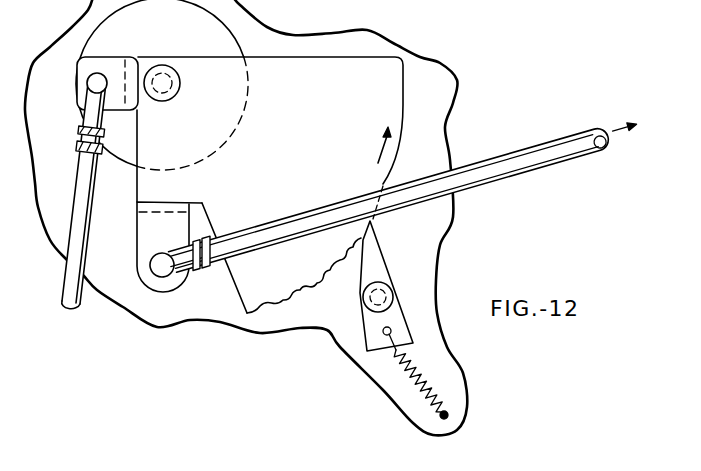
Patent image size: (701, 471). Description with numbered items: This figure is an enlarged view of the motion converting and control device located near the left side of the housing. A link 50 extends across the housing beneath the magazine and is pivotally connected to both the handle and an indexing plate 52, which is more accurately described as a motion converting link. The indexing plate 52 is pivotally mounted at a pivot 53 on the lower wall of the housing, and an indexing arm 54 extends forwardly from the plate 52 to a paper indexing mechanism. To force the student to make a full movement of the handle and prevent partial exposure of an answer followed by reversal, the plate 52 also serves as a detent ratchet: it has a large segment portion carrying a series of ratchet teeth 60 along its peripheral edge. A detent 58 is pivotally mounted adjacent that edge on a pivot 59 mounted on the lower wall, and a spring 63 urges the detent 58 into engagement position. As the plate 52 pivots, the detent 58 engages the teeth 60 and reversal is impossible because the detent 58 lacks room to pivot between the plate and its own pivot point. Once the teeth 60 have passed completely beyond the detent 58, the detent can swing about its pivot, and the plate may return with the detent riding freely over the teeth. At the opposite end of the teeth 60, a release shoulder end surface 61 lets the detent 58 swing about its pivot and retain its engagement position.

The link 50 is at (508, 158).
The indexing plate 52 is at (321, 143).
The pivot 53 is at (173, 99).
The indexing arm 54 is at (75, 191).
The detent 58 is at (383, 261).
The pivot 59 is at (394, 295).
The ratchet teeth 60 is at (323, 284).
The release shoulder end surface 61 is at (386, 181).
The spring 63 is at (428, 397).